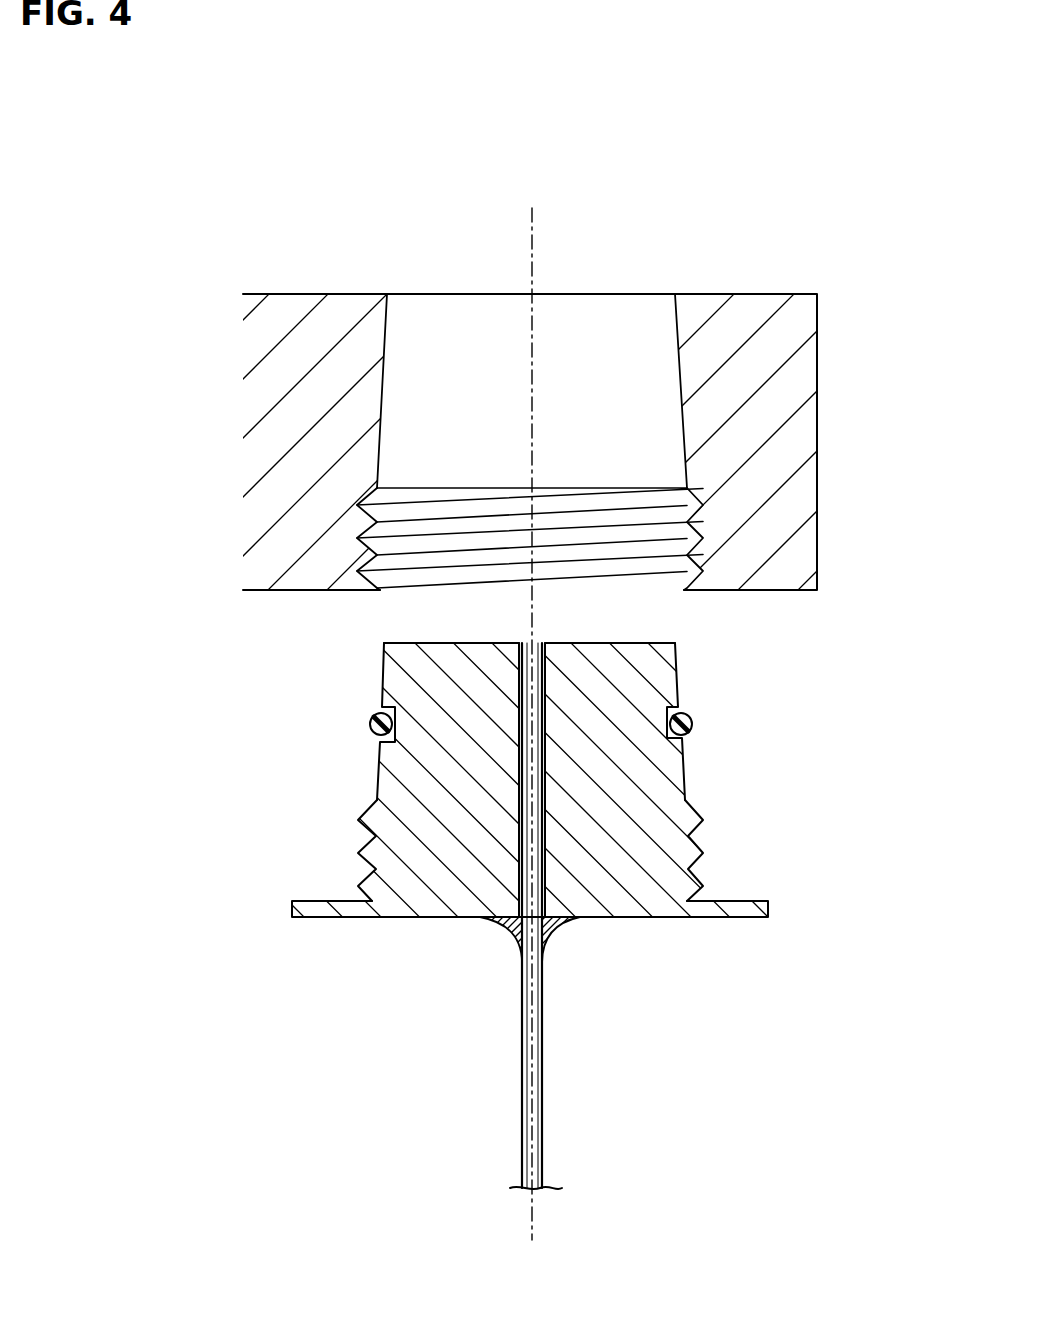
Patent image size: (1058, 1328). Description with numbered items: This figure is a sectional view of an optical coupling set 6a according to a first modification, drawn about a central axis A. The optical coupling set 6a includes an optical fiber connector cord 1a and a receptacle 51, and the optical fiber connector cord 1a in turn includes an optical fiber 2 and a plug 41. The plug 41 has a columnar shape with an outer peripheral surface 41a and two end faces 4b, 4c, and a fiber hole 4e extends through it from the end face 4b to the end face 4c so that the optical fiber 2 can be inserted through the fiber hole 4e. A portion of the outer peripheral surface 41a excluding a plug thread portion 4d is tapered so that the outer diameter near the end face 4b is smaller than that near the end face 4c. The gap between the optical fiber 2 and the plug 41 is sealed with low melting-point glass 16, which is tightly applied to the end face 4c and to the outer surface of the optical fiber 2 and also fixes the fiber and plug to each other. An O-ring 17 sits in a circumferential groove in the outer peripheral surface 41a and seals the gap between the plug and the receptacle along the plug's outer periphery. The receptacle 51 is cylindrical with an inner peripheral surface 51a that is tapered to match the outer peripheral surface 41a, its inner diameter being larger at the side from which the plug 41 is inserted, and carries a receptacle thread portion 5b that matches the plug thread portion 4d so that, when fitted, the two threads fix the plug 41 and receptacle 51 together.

The axis A is at (532, 236).
The optical coupling set 6a is at (529, 362).
The receptacle 51 is at (822, 418).
The inner peripheral surface 51a is at (672, 330).
The receptacle thread portion 5b is at (441, 508).
The optical fiber connector cord 1a is at (476, 896).
The plug 41 is at (476, 827).
The outer peripheral surface 41a is at (383, 668).
The end face 4b is at (613, 643).
The fiber hole 4e is at (518, 684).
The plug thread portion 4d is at (353, 802).
The end face 4c is at (404, 918).
The O-ring 17 is at (369, 728).
The low melting-point glass 16 is at (517, 933).
The optical fiber 2 is at (543, 1023).